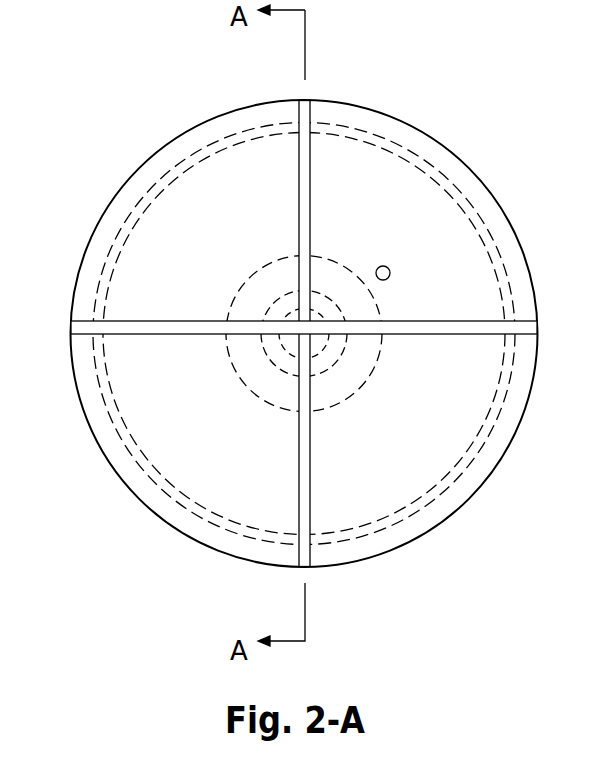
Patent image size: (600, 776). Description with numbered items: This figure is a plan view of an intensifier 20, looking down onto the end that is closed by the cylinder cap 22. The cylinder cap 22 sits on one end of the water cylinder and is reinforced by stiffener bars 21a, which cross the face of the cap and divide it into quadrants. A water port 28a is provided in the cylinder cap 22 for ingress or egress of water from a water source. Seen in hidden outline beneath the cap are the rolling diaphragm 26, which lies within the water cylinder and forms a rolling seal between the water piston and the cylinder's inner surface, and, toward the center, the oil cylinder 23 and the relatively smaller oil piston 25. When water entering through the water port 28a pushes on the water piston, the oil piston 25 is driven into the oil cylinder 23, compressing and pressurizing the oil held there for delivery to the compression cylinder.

The intensifier 20 is at (314, 330).
The stiffener bars 21a is at (160, 320).
The cylinder cap 22 is at (165, 510).
The oil cylinder 23 is at (337, 398).
The oil piston 25 is at (290, 348).
The rolling diaphragm 26 is at (443, 487).
The water ports 28a is at (390, 268).